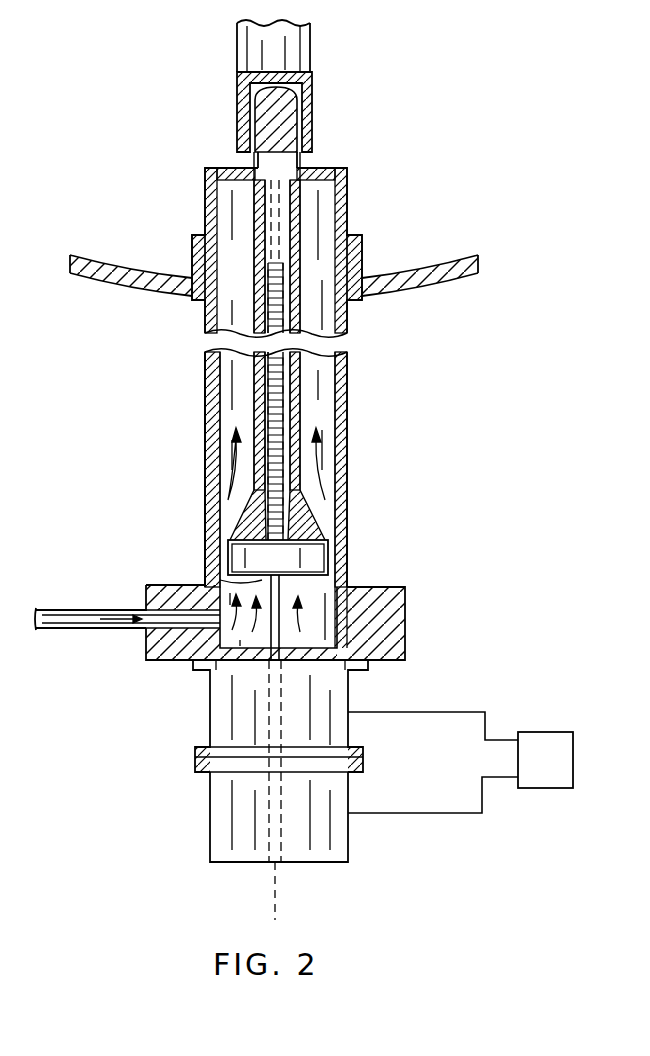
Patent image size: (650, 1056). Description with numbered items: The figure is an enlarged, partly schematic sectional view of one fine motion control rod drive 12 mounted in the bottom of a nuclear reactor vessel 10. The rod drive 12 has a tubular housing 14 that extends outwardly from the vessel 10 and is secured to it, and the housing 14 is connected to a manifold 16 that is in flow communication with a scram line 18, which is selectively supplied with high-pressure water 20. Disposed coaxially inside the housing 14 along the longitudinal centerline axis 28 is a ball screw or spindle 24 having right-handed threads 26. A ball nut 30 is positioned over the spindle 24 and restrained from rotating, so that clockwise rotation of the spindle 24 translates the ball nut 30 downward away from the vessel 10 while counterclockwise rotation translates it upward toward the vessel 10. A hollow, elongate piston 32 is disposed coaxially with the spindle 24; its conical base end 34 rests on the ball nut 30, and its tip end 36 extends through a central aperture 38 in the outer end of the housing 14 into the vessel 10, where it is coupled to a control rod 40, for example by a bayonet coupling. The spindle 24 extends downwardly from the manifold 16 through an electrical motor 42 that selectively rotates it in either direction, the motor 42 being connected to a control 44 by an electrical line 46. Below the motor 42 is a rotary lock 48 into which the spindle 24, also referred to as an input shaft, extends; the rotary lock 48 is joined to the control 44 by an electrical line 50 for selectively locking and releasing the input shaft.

The nuclear reactor vessel 10 is at (106, 270).
The fine motion control rod drive 12 is at (351, 416).
The tubular housing 14 is at (206, 415).
The manifold 16 is at (393, 587).
The scram line 18 is at (78, 610).
The high-pressure water 20 is at (300, 167).
The spindle 24 is at (279, 636).
The right-handed threads 26 is at (219, 586).
The longitudinal centerline axis 28 is at (278, 900).
The ball nut 30 is at (328, 550).
The piston 32 is at (303, 445).
The conical base end 34 is at (310, 524).
The tip end 36 is at (290, 122).
The central aperture 38 is at (256, 166).
The control rod 40 is at (311, 48).
The electrical motor 42 is at (209, 696).
The control 44 is at (562, 775).
The electrical line 46 is at (432, 712).
The rotary lock 48 is at (209, 817).
The electrical line 50 is at (420, 813).